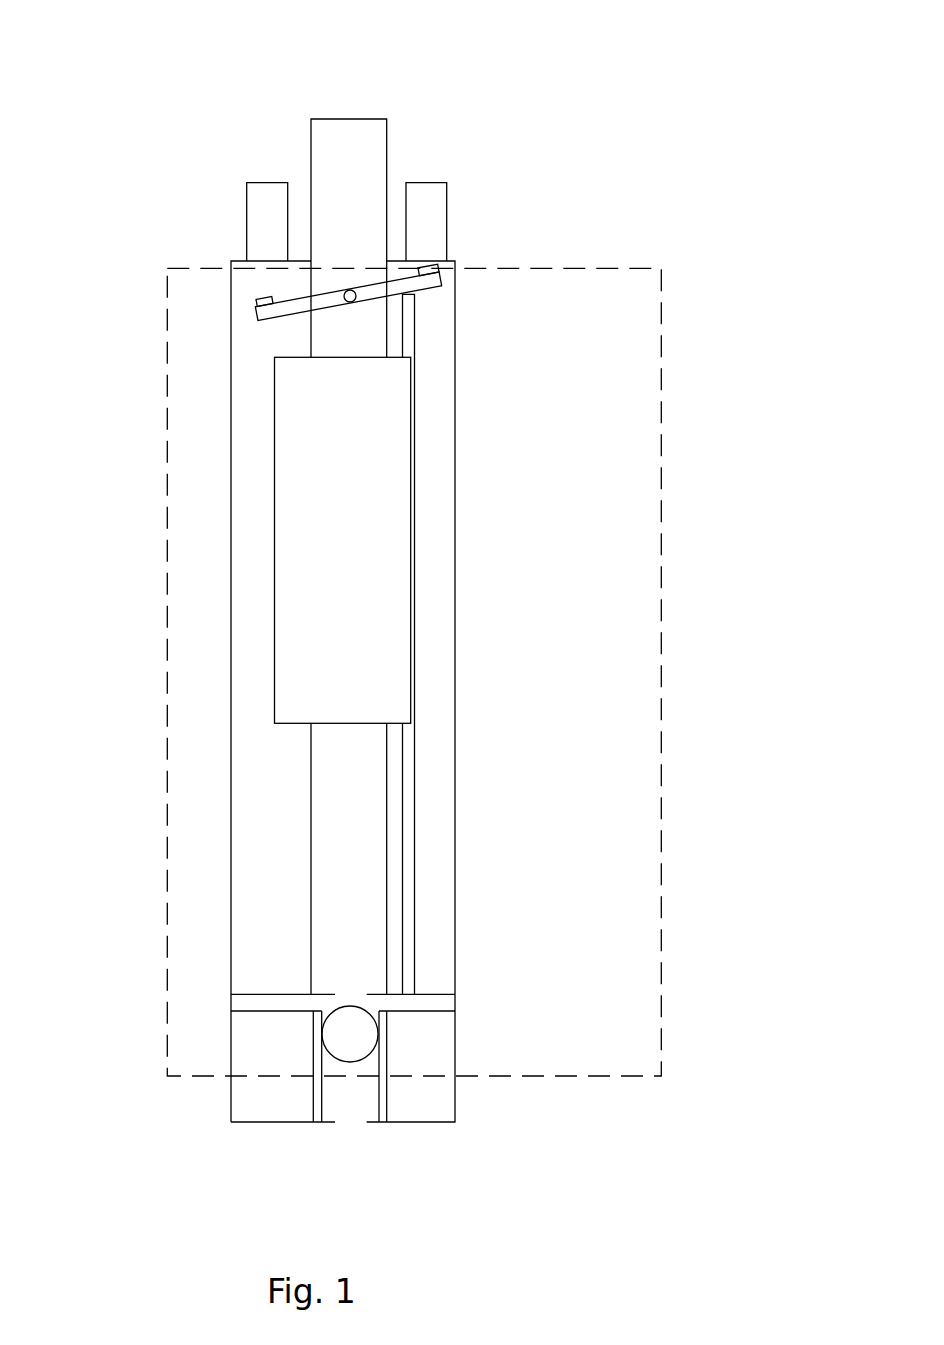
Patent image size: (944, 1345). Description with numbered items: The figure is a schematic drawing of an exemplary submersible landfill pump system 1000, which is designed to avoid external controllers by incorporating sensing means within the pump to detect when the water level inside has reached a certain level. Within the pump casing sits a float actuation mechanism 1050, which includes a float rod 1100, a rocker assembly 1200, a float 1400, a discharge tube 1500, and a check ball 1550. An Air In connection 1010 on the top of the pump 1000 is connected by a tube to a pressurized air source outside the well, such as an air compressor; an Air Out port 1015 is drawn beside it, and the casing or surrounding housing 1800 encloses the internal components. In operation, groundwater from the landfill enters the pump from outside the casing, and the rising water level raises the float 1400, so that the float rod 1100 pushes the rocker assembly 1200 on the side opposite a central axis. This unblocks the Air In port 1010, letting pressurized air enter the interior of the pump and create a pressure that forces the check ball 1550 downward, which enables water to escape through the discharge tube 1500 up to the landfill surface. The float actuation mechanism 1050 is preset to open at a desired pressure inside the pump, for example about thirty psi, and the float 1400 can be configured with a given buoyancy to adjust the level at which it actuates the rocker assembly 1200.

The submersible landfill pump system 1000 is at (329, 88).
The Air In connection 1010 is at (255, 240).
The air outlet 1015 is at (438, 223).
The float actuation mechanism 1050 is at (662, 687).
The float rod 1100 is at (415, 775).
The rocker assembly 1200 is at (430, 287).
The float 1400 is at (387, 472).
The discharge tube 1500 is at (343, 925).
The check ball 1550 is at (358, 1043).
The housing 1800 is at (231, 511).